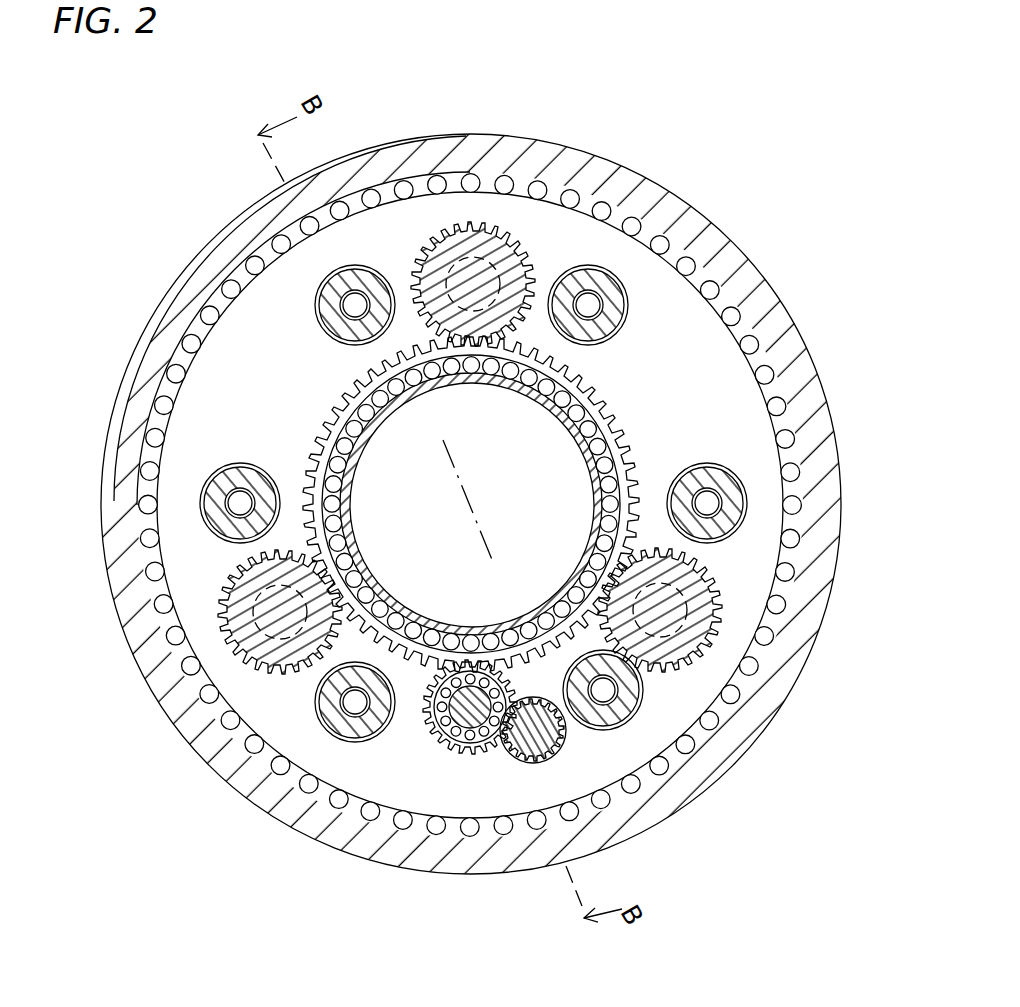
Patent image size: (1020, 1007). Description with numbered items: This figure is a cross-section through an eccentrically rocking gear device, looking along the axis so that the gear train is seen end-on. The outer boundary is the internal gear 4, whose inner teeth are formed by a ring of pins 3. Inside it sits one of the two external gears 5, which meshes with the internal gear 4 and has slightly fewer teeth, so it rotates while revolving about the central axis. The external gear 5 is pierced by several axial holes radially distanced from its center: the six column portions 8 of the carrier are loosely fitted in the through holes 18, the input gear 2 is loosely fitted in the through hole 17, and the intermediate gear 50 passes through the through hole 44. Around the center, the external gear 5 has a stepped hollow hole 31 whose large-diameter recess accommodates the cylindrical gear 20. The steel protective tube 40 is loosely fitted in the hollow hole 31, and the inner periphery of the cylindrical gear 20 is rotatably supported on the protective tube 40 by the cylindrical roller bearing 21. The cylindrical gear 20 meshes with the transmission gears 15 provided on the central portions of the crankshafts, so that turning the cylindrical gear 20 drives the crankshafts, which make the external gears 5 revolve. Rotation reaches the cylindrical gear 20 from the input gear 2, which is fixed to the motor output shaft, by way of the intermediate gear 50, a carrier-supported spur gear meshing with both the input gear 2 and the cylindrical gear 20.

The input gear 2 is at (517, 821).
The pins 3 is at (464, 443).
The internal gear 4 is at (471, 467).
The external gears 5 is at (477, 442).
The column portions 8 is at (636, 216).
The transmission gears 15 is at (428, 468).
The through hole 17 is at (608, 788).
The through holes 18 is at (681, 273).
The cylindrical gear 20 is at (344, 470).
The cylindrical roller bearing 21 is at (472, 505).
The hollow holes 31 is at (367, 442).
The protective tube 40 is at (471, 504).
The through hole 44 is at (383, 797).
The intermediate gear 50 is at (431, 811).